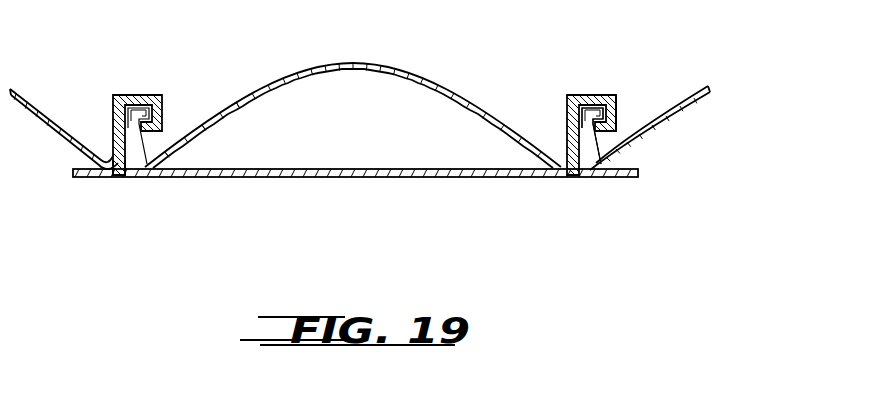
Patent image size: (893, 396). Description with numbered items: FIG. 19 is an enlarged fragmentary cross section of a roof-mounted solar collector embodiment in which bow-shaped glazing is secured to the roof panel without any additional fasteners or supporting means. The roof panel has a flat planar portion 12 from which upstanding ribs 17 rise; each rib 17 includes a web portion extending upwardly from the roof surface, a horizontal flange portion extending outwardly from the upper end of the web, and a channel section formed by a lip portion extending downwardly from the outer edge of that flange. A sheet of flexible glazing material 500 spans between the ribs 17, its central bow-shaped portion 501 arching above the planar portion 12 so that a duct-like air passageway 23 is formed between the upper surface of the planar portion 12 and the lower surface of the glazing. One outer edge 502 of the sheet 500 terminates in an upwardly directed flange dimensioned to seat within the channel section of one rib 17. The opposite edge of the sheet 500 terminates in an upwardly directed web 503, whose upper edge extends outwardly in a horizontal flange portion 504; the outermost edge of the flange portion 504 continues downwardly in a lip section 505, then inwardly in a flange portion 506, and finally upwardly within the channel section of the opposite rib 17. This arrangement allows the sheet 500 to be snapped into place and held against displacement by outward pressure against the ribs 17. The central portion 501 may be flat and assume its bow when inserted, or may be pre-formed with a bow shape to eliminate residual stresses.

The planar portion 12 is at (250, 168).
The roof panel rib 17 is at (116, 122).
The air passageway 23 is at (362, 133).
The sheet of flexible glazing material 500 is at (348, 67).
The central bow-shaped portion 501 is at (238, 99).
The outer edge 502 is at (125, 177).
The upwardly directed web 503 is at (566, 107).
The horizontal flange portion 504 is at (594, 96).
The lip section 505 is at (617, 112).
The flange portion 506 is at (621, 137).